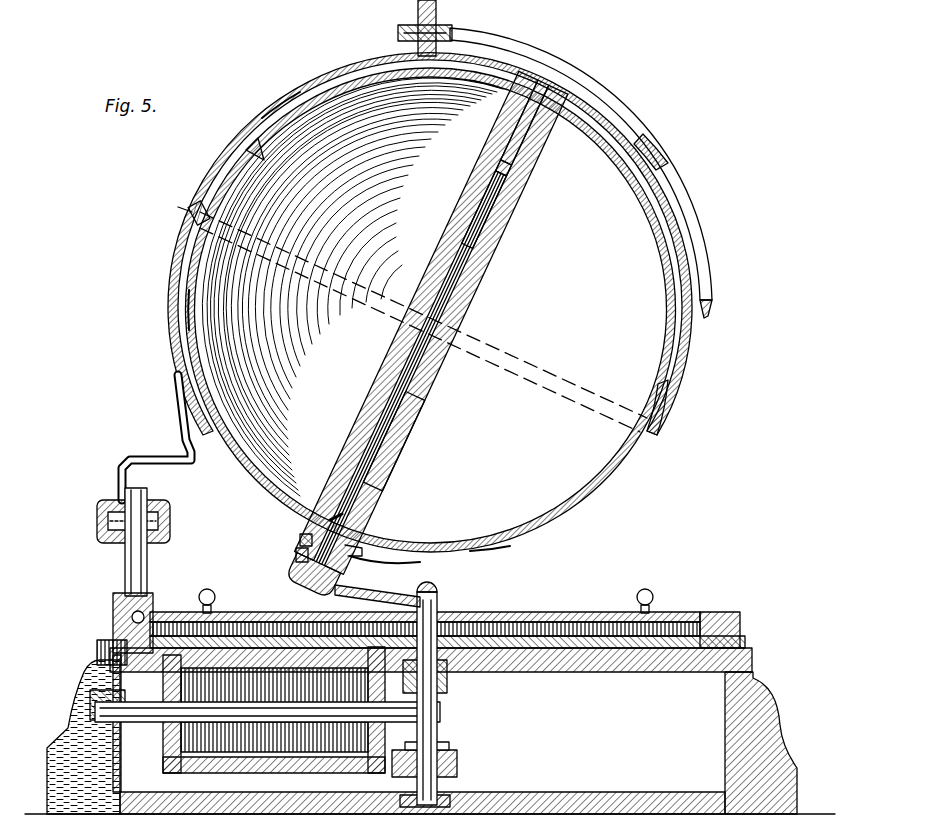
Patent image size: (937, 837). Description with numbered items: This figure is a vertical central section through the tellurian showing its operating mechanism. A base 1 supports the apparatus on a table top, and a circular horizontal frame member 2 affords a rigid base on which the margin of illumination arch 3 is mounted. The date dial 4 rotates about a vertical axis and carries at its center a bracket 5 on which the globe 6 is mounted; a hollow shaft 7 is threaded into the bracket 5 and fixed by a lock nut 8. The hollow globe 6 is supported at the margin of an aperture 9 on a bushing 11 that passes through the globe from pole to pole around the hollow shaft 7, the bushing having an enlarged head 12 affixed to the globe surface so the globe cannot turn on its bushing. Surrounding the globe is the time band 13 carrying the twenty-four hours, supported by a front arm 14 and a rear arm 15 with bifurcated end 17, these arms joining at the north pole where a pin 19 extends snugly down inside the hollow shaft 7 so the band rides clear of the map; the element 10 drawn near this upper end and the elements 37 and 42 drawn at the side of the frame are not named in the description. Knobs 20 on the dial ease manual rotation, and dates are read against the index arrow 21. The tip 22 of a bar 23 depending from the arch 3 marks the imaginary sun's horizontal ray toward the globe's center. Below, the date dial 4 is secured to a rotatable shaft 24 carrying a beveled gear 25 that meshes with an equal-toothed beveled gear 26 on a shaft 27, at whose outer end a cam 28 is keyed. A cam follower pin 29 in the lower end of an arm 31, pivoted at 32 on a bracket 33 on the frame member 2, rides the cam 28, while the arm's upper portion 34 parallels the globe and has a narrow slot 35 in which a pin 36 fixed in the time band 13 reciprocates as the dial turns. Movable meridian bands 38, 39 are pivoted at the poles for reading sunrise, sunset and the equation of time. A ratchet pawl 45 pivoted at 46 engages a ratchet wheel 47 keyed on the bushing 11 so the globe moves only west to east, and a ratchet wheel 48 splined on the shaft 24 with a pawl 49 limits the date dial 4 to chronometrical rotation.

The base 1 is at (770, 712).
The circular horizontal frame member 2 is at (735, 640).
The margin of illumination arch 3 is at (437, 12).
The date dial 4 is at (598, 612).
The bracket 5 is at (296, 556).
The globe 6 is at (612, 478).
The hollow shaft 7 is at (362, 462).
The lock nut 8 is at (296, 580).
The aperture 9 is at (328, 522).
The arm 10 is at (560, 92).
The bushing 11 is at (368, 415).
The enlarged head 12 is at (362, 548).
The time band 13 is at (330, 268).
The front arm 14 is at (688, 365).
The rear arm 15 is at (275, 120).
The bifurcated end 17 is at (248, 150).
The pin 19 is at (522, 142).
The knobs 20 is at (208, 589).
The index arrow 21 is at (722, 612).
The tip 22 is at (708, 316).
The bar 23 is at (655, 138).
The rotatable shaft 24 is at (440, 714).
The beveled gear 25 is at (448, 686).
The beveled gear 26 is at (368, 738).
The shaft 27 is at (290, 724).
The cam 28 is at (118, 748).
The cam follower pin 29 is at (92, 670).
The arm 31 is at (100, 651).
The pivot 32 is at (97, 522).
The bracket 33 is at (148, 555).
The portion 34 is at (178, 403).
The narrow slot 35 is at (172, 308).
The pin 36 is at (195, 210).
The screw 37 is at (143, 614).
The movable meridian band 38 is at (190, 345).
The movable meridian band 39 is at (575, 520).
The block 42 is at (122, 595).
The ratchet pawl 45 is at (438, 592).
The pivot 46 is at (395, 560).
The ratchet wheel 47 is at (300, 540).
The ratchet wheel 48 is at (458, 758).
The pawl 49 is at (440, 745).